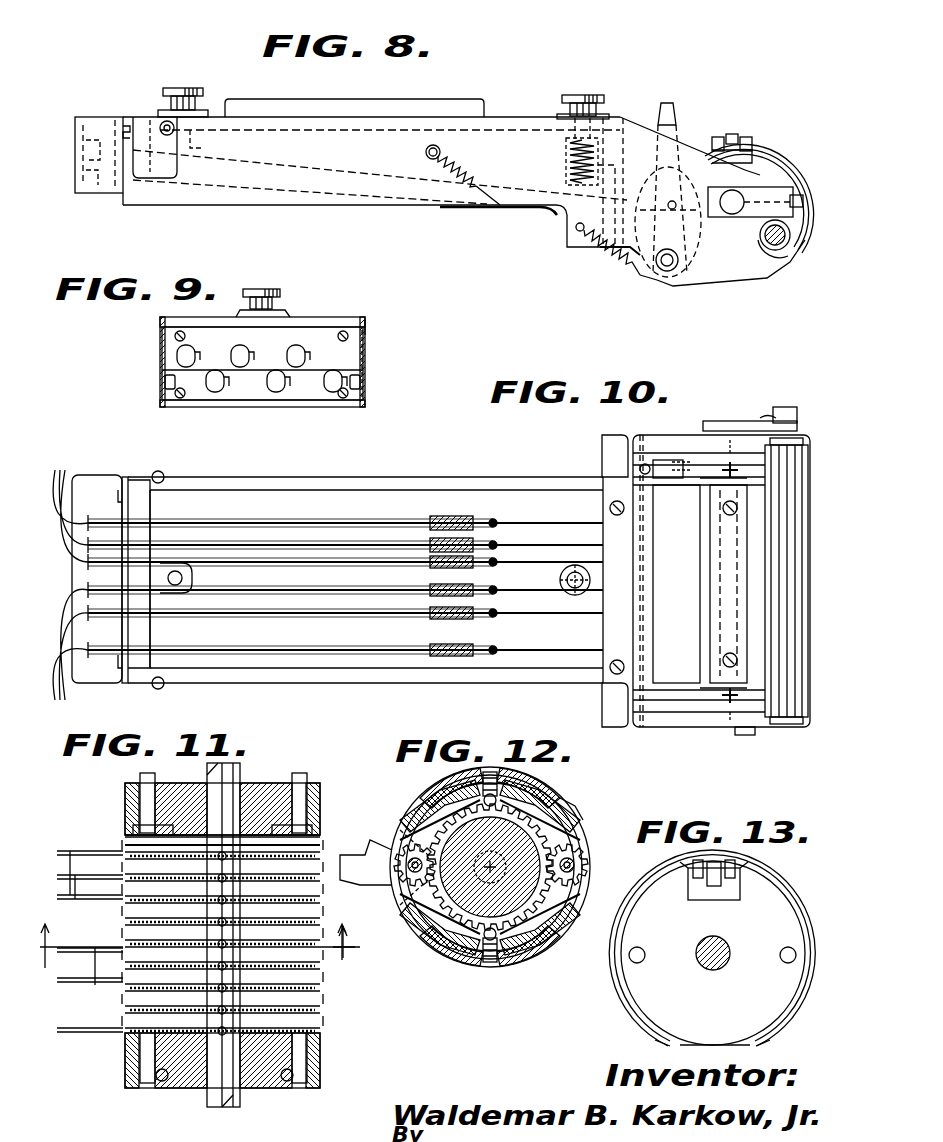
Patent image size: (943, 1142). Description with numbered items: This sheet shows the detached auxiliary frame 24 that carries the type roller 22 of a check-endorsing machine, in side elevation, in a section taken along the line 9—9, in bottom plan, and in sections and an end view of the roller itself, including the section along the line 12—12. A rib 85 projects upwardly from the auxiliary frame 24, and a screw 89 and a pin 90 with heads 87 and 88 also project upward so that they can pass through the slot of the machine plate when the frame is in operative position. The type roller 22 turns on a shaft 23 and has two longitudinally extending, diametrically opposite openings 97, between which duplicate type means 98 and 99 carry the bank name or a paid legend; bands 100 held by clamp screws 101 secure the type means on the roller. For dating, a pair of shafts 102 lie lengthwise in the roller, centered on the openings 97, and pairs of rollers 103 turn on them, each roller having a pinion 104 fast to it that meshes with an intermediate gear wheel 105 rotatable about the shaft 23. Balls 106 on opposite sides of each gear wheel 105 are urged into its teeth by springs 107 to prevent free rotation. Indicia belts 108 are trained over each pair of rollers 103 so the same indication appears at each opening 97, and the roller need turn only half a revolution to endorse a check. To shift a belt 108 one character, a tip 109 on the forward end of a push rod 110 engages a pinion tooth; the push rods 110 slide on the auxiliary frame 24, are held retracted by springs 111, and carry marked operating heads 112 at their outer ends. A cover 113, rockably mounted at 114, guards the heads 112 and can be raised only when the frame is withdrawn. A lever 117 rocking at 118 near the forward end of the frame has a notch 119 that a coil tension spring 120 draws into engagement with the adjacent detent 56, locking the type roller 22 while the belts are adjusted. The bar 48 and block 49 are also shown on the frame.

In FIG. 8, the section line 9— 9 is at (94, 96).
In FIG. 11, the section line 12— 12 is at (200, 950).
In FIG. 12, the section line 12— 12 is at (352, 949).
In FIG. 8, the type roller 22 is at (776, 124).
In FIG. 10, the type roller 22 is at (721, 581).
In FIG. 11, the type roller 22 is at (323, 768).
In FIG. 12, the type roller 22 is at (594, 783).
In FIG. 13, the type roller 22 is at (713, 953).
In FIG. 8, the shaft 23 is at (762, 240).
In FIG. 10, the shaft 23 is at (745, 735).
In FIG. 11, the shaft 23 is at (207, 790).
In FIG. 13, the shaft 23 is at (722, 940).
In FIG. 8, the auxiliary frame 24 is at (255, 205).
In FIG. 9, the auxiliary frame 24 is at (308, 318).
In FIG. 10, the auxiliary frame 24 is at (368, 478).
In FIG. 10, the bar 48 is at (750, 420).
In FIG. 10, the block 49 is at (795, 405).
In FIG. 8, the detent 56 is at (675, 200).
In FIG. 13, the detent 56 is at (645, 950).
In FIG. 8, the rib 85 is at (465, 98).
In FIG. 8, the head 87 is at (172, 90).
In FIG. 9, the head 87 is at (254, 290).
In FIG. 8, the head 88 is at (575, 96).
In FIG. 8, the screw 89 is at (192, 130).
In FIG. 8, the pin 90 is at (585, 130).
In FIG. 12, the openings 97 is at (390, 835).
In FIG. 12, the type means 98 is at (545, 790).
In FIG. 12, the type means 99 is at (420, 800).
In FIG. 8, the bands 100 is at (795, 160).
In FIG. 13, the bands 100 is at (660, 872).
In FIG. 8, the clamp screws 101 is at (722, 135).
In FIG. 13, the clamp screws 101 is at (722, 864).
In FIG. 11, the shafts 102 is at (150, 1088).
In FIG. 12, the shafts 102 is at (412, 895).
In FIG. 11, the rollers 103 is at (320, 850).
In FIG. 12, the rollers 103 is at (385, 860).
In FIG. 11, the pinion 104 is at (125, 848).
In FIG. 12, the pinion 104 is at (410, 880).
In FIG. 11, the intermediate gear wheel 105 is at (245, 853).
In FIG. 12, the intermediate gear wheel 105 is at (575, 805).
In FIG. 12, the balls 106 is at (487, 808).
In FIG. 12, the springs 107 is at (505, 780).
In FIG. 11, the belts 108 is at (325, 835).
In FIG. 12, the belts 108 is at (395, 840).
In FIG. 11, the tips 109 is at (80, 850).
In FIG. 12, the tips 109 is at (395, 882).
In FIG. 8, the push rods 110 is at (530, 210).
In FIG. 10, the push rods 110 is at (280, 650).
In FIG. 8, the springs 111 is at (447, 173).
In FIG. 10, the springs 111 is at (480, 515).
In FIG. 9, the heads 112 is at (228, 360).
In FIG. 10, the heads 112 is at (85, 580).
In FIG. 8, the cover 113 is at (95, 120).
In FIG. 9, the cover 113 is at (365, 345).
In FIG. 10, the cover 113 is at (112, 478).
In FIG. 8, the rockable mounting 114 is at (160, 126).
In FIG. 9, the rockable mounting 114 is at (365, 328).
In FIG. 10, the rockable mounting 114 is at (158, 477).
In FIG. 8, the lever 117 is at (690, 92).
In FIG. 8, the pivot 118 is at (668, 272).
In FIG. 8, the notch 119 is at (732, 206).
In FIG. 8, the coil tension spring 120 is at (630, 266).